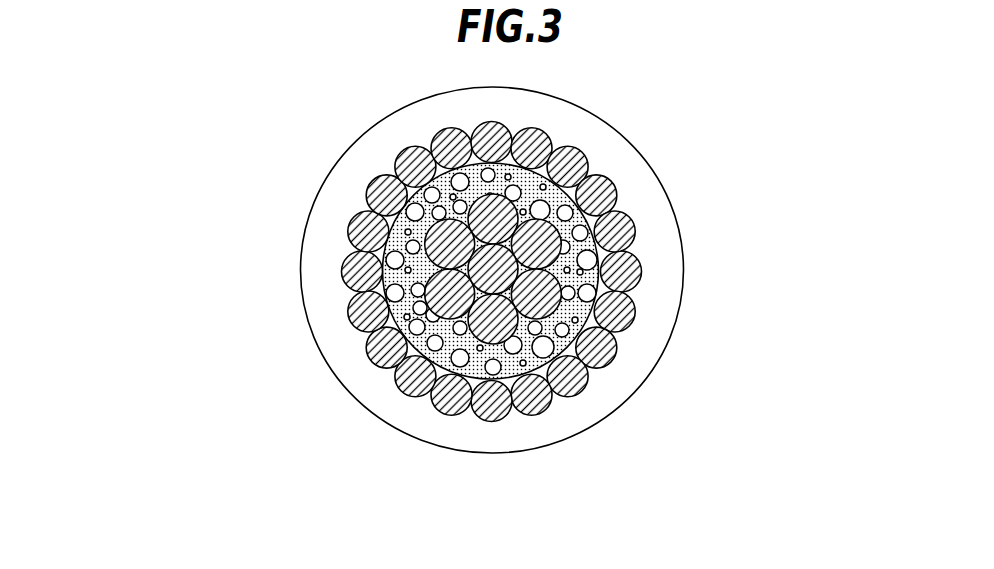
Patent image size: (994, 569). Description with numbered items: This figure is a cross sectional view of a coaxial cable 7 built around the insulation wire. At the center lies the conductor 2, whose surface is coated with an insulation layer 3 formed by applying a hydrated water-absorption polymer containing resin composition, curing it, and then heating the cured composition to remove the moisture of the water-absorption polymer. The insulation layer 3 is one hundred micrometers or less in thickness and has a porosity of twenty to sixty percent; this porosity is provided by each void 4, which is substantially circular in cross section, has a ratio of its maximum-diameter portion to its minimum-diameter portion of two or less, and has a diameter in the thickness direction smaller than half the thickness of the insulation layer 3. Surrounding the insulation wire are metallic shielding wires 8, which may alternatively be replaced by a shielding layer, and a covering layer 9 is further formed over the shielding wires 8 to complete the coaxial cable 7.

The conductor 2 is at (583, 147).
The insulation layer 3 is at (493, 413).
The void 4 is at (635, 236).
The coaxial cable 7 is at (279, 275).
The shielding wire 8 is at (632, 302).
The covering layer 9 is at (610, 397).